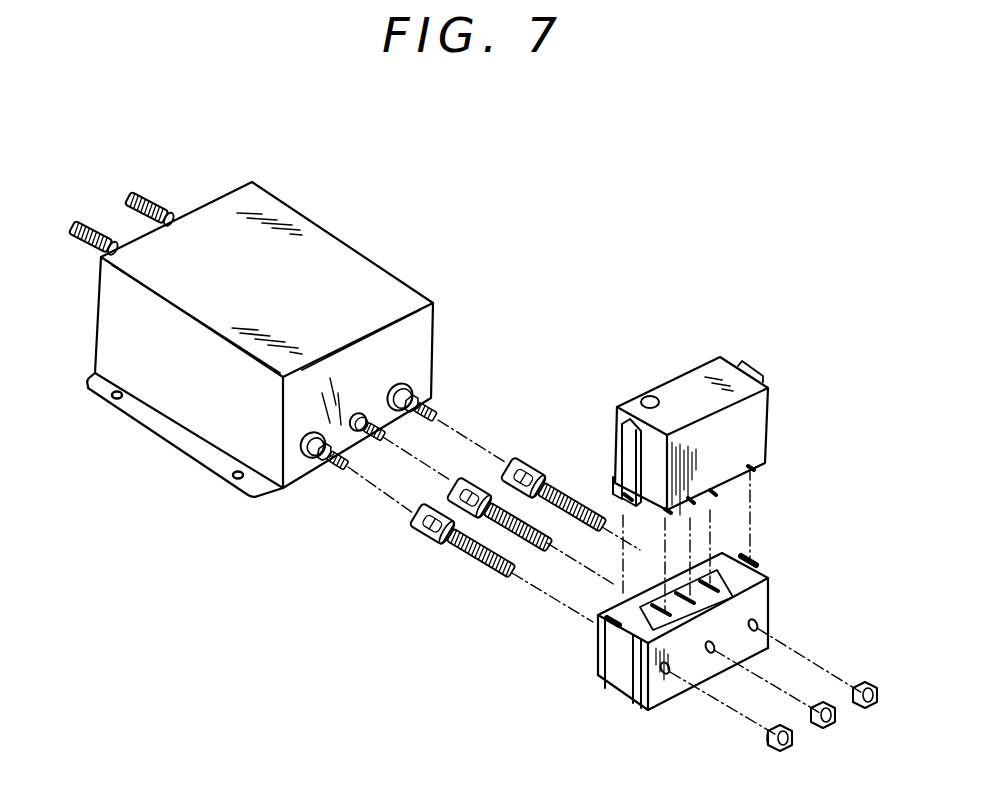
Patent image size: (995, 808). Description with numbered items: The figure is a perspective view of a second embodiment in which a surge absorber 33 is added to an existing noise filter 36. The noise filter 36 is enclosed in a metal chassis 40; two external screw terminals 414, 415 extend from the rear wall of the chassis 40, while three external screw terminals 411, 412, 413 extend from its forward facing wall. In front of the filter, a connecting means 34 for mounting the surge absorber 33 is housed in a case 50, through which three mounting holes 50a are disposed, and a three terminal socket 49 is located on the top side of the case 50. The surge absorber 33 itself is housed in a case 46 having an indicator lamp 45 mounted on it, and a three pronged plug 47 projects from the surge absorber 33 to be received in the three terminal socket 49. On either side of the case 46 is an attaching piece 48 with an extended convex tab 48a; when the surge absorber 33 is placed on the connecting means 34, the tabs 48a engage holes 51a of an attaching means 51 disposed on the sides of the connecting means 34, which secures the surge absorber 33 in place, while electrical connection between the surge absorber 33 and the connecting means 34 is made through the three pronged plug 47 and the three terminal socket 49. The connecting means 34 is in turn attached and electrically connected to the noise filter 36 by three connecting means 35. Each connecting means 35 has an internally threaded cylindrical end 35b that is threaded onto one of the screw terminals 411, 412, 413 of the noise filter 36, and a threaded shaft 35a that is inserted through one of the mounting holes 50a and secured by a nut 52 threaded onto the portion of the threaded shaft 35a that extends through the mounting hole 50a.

The noise filter 36 is at (330, 216).
The metal chassis 40 is at (120, 338).
The external screw terminal 411 is at (298, 474).
The external screw terminal 412 is at (442, 405).
The external screw terminal 413 is at (358, 408).
The external screw terminal 414 is at (75, 222).
The external screw terminal 415 is at (130, 196).
The connecting means 35 is at (469, 470).
The threaded shaft 35a is at (481, 561).
The internally threaded cylindrical end 35b is at (424, 533).
The surge absorber 33 is at (722, 348).
The indicator lamp 45 is at (653, 396).
The case 46 is at (752, 418).
The three pronged plug 47 is at (724, 497).
The attaching piece 48 is at (625, 438).
The convex tab 48a is at (618, 478).
The connecting means 34 is at (596, 700).
The three terminal socket 49 is at (715, 598).
The case 50 is at (762, 610).
The mounting holes 50a is at (753, 633).
The attaching means 51 is at (613, 673).
The holes 51a is at (597, 622).
The nuts 52 is at (850, 692).